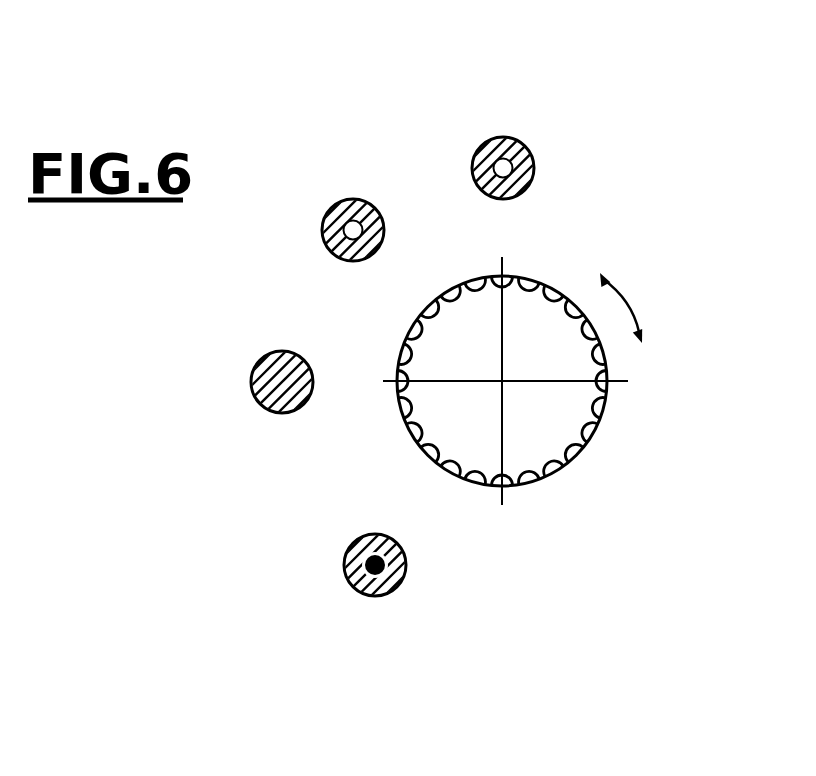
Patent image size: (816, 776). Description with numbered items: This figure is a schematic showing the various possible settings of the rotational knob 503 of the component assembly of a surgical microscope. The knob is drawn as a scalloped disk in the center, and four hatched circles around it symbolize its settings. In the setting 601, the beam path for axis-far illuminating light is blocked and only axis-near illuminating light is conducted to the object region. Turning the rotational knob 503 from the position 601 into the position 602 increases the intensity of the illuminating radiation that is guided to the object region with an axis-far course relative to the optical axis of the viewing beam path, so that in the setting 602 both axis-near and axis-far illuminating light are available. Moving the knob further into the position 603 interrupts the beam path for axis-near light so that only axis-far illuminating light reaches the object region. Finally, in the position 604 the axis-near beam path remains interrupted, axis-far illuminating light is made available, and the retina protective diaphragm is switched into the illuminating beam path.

The rotational knob 503 is at (548, 428).
The setting 601 is at (540, 126).
The position 602 is at (333, 180).
The position 603 is at (247, 413).
The position 604 is at (360, 603).